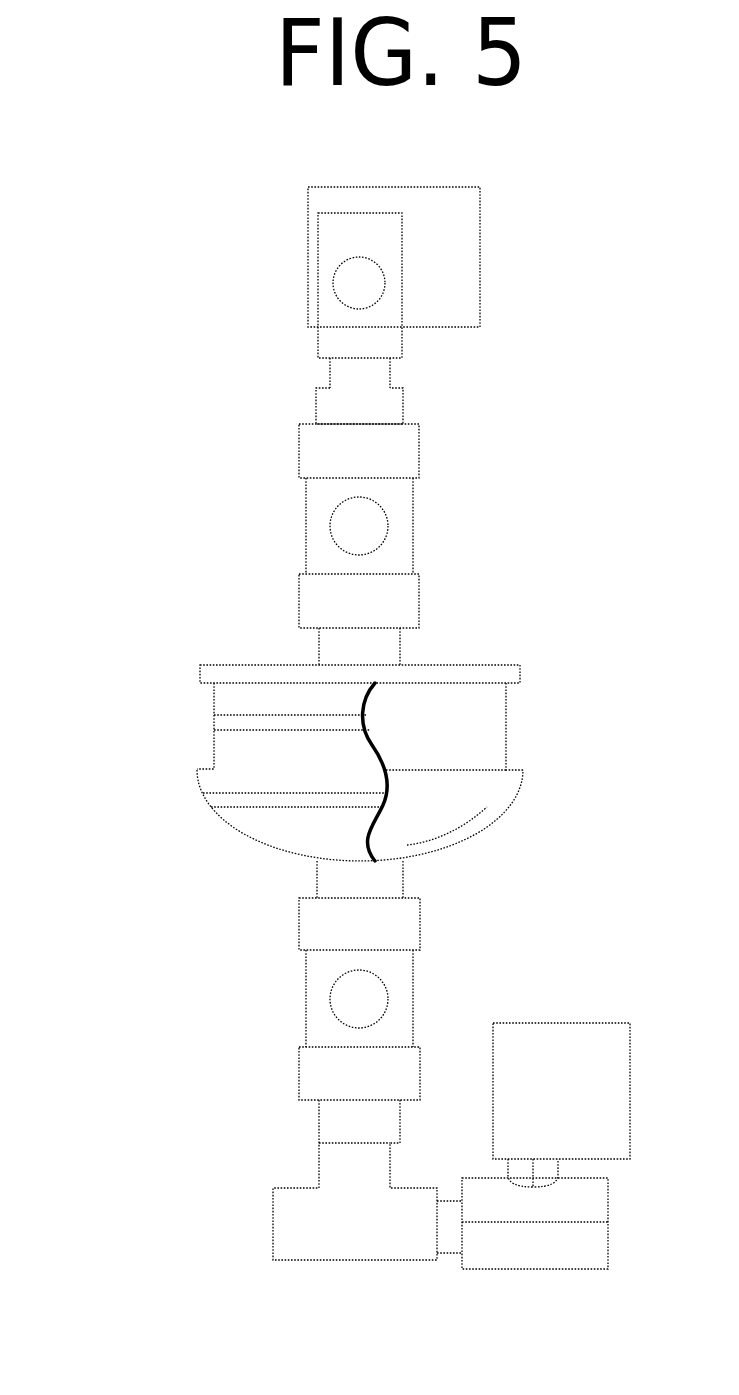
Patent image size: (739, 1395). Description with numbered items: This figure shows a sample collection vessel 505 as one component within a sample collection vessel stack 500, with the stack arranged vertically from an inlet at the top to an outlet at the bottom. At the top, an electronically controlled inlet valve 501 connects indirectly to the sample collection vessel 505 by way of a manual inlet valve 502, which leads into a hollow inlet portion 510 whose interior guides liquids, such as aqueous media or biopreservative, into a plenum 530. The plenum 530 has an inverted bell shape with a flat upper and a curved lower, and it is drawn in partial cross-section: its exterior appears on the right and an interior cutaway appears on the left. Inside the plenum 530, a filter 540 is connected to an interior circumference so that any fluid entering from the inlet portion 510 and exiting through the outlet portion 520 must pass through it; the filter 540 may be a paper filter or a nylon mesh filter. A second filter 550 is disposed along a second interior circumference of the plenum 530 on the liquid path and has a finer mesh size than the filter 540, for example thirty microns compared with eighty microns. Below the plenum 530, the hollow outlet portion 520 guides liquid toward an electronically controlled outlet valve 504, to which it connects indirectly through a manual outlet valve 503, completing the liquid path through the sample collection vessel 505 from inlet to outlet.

The sample collection vessel stack 500 is at (132, 182).
The electronically controlled inlet valve 501 is at (482, 268).
The manual inlet valve 502 is at (421, 443).
The manual outlet valve 503 is at (413, 998).
The electronically controlled outlet valve 504 is at (572, 1015).
The sample collection vessel 505 is at (500, 665).
The inlet portion 510 is at (318, 658).
The outlet portion 520 is at (308, 878).
The plenum 530 is at (533, 863).
The filter 540 is at (262, 736).
The second filter 550 is at (270, 811).